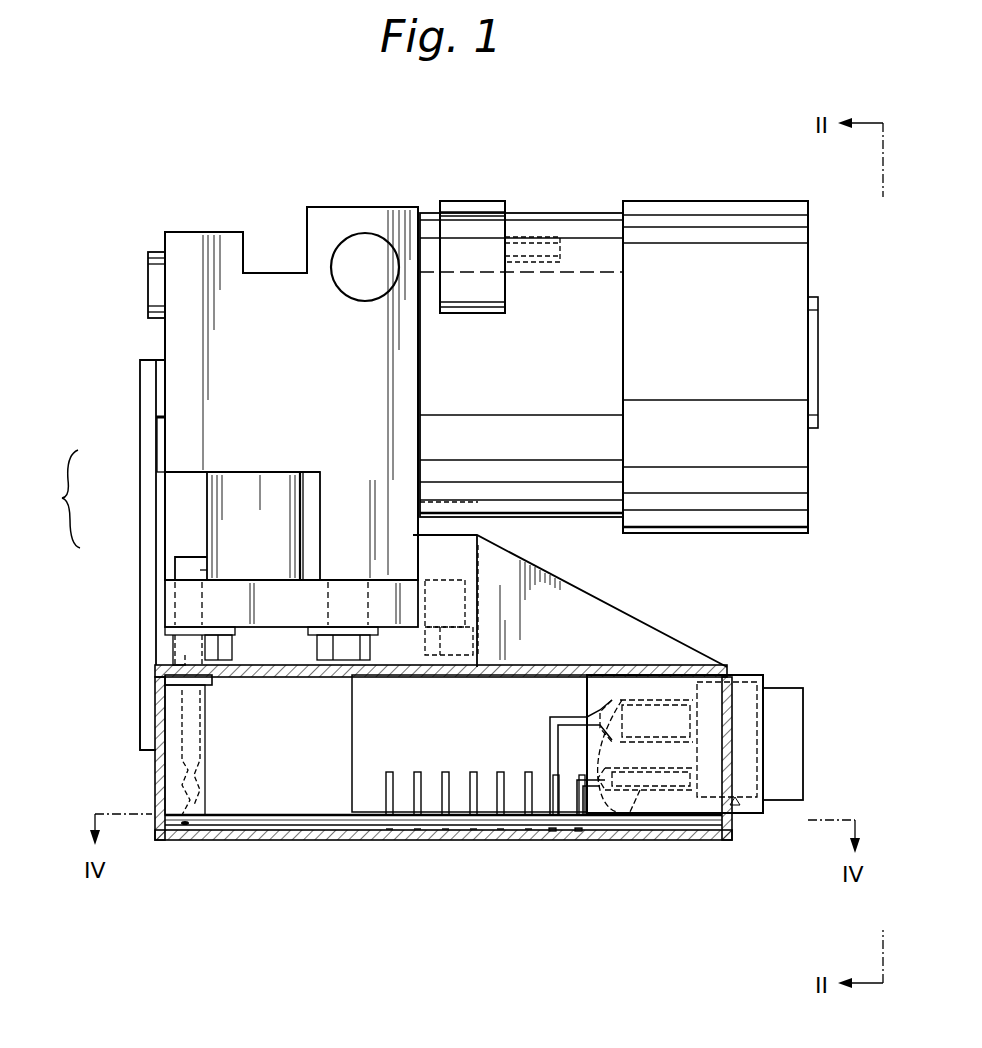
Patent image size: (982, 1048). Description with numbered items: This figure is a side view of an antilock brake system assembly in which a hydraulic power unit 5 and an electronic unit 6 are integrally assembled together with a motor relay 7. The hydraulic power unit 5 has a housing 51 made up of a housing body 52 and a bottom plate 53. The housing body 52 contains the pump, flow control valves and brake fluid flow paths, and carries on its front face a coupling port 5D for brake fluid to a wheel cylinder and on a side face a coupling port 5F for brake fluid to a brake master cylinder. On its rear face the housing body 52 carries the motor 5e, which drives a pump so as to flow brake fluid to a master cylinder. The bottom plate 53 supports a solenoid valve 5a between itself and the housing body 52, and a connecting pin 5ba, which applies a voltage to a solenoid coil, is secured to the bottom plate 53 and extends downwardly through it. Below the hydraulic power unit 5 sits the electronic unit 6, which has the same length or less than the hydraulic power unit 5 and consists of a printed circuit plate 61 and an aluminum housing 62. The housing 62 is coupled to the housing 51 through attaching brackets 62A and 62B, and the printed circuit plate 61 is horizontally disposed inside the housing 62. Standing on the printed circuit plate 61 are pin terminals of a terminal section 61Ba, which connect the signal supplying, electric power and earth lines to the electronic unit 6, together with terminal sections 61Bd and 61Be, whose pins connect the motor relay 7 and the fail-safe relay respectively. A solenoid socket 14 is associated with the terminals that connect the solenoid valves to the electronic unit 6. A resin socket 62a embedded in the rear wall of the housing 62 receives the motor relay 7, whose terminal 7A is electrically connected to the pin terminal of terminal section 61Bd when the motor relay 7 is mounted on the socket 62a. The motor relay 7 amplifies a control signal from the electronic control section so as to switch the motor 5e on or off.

The hydraulic power unit 5 is at (372, 200).
The motor 5e is at (593, 213).
The coupling port 5D is at (150, 281).
The coupling port 5F is at (375, 292).
The solenoid valve 5a is at (306, 506).
The connecting pin 5ba is at (190, 575).
The attaching bracket 62B is at (148, 402).
The solenoid socket 14 is at (152, 782).
The housing 51 is at (57, 499).
The housing body 52 is at (170, 446).
The bottom plate 53 is at (168, 600).
The attaching bracket 62A is at (608, 614).
The electronic unit 6 is at (215, 848).
The housing 62 is at (275, 842).
The socket 62a is at (750, 815).
The printed circuit plate 61 is at (350, 842).
The terminal section 61Ba is at (447, 842).
The terminal section 61Bd is at (553, 840).
The terminal section 61Be is at (565, 829).
The motor relay 7 is at (803, 741).
The terminal 7A is at (637, 795).